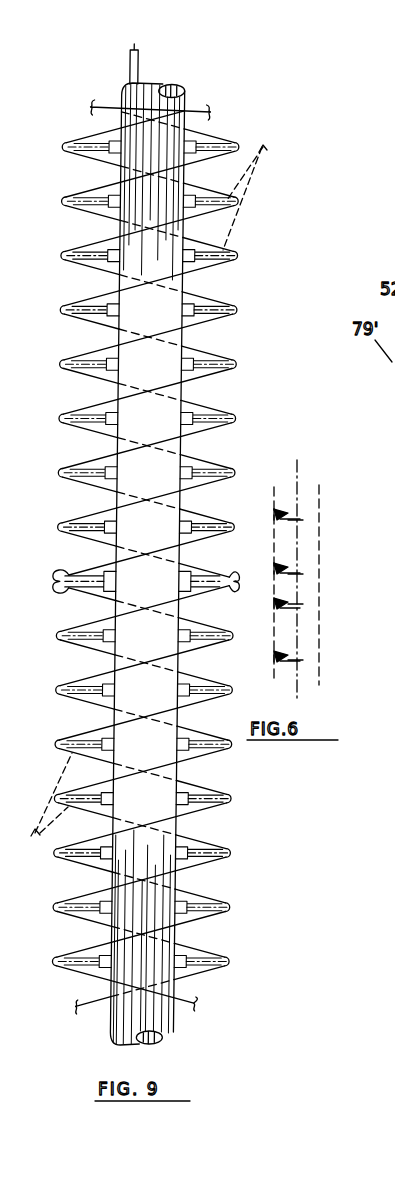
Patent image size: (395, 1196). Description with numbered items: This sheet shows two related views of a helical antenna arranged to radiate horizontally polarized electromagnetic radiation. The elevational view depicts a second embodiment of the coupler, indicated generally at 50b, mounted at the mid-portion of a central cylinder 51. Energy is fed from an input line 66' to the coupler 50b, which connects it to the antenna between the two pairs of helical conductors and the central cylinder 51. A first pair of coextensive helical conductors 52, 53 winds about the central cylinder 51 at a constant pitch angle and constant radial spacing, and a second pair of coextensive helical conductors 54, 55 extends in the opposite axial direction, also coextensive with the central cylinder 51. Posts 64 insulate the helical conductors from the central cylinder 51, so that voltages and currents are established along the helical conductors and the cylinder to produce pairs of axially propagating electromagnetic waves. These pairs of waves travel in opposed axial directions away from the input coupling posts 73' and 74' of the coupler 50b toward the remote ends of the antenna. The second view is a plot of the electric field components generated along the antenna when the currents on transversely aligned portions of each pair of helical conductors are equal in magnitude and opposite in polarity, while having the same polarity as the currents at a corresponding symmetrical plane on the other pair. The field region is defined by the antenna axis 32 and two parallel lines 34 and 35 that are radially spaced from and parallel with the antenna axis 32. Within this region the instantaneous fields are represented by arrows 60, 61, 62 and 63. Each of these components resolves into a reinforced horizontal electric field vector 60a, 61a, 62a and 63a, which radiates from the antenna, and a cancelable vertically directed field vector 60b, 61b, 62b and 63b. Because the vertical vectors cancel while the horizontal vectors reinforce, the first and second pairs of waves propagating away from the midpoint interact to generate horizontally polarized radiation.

In FIG. 9, the coupler 50b is at (147, 531).
In FIG. 9, the central cylinder 51 is at (172, 1025).
In FIG. 9, the helical conductor 52 is at (77, 460).
In FIG. 9, the helical conductor 53 is at (220, 356).
In FIG. 9, the helical conductor 54 is at (72, 917).
In FIG. 9, the helical conductor 55 is at (207, 922).
In FIG. 9, the posts 64 is at (33, 633).
In FIG. 9, the input line 66' is at (173, 49).
In FIG. 9, the input coupling post 73' is at (219, 568).
In FIG. 9, the input coupling post 74' is at (57, 564).
In FIG. 6, the antenna axis 32 is at (299, 463).
In FIG. 6, the parallel line 34 is at (320, 488).
In FIG. 6, the parallel line 35 is at (274, 488).
In FIG. 6, the electric field component 60 is at (302, 518).
In FIG. 6, the horizontal electric field vector 60a is at (303, 520).
In FIG. 6, the vertical field vector 60b is at (276, 520).
In FIG. 6, the electric field component 61 is at (302, 572).
In FIG. 6, the horizontal electric field vector 61a is at (303, 574).
In FIG. 6, the vertical field vector 61b is at (276, 568).
In FIG. 6, the electric field component 62 is at (302, 607).
In FIG. 6, the horizontal electric field vector 62a is at (303, 604).
In FIG. 6, the vertical field vector 62b is at (275, 605).
In FIG. 6, the electric field component 63 is at (302, 662).
In FIG. 6, the horizontal electric field vector 63a is at (303, 660).
In FIG. 6, the vertical field vector 63b is at (275, 660).